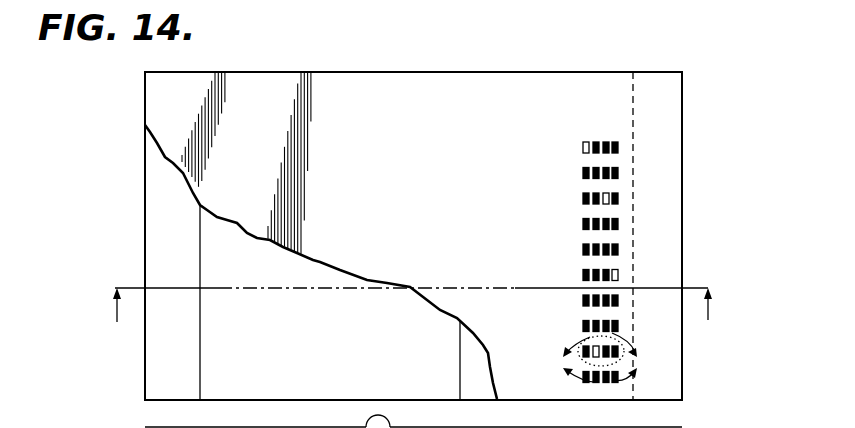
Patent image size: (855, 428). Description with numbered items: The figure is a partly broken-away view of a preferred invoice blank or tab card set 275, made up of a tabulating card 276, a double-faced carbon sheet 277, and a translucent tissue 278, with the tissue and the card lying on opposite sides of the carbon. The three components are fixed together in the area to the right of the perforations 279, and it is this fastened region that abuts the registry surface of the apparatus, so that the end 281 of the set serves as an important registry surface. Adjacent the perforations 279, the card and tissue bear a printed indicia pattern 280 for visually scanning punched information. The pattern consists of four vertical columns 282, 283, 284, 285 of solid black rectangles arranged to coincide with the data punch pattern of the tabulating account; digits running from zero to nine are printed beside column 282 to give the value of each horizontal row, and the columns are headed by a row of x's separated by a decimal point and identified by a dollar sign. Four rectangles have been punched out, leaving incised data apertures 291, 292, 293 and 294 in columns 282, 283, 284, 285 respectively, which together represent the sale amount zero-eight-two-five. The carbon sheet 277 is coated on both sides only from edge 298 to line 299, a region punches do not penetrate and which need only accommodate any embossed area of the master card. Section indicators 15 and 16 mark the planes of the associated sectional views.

The section line 15- 15 is at (412, 316).
The section line 16- 16 is at (602, 357).
The invoice blank or tab card set 275 is at (452, 92).
The tabulating card 276 is at (163, 232).
The double-faced carbon sheet 277 is at (208, 369).
The translucent tissue 278 is at (321, 88).
The perforations 279 is at (633, 208).
The printed indicia pattern 280 is at (626, 273).
The end of the tabulating card set 281 is at (682, 219).
The first column of black rectangles 282 is at (586, 384).
The second column of black rectangles 283 is at (596, 384).
The third column of black rectangles 284 is at (606, 384).
The fourth column of black rectangles 285 is at (616, 384).
The incised data aperture 291 is at (583, 150).
The incised data aperture 292 is at (592, 335).
The incised data aperture 293 is at (611, 195).
The incised data aperture 294 is at (620, 272).
The edge 298 is at (192, 220).
The line 299 is at (452, 364).